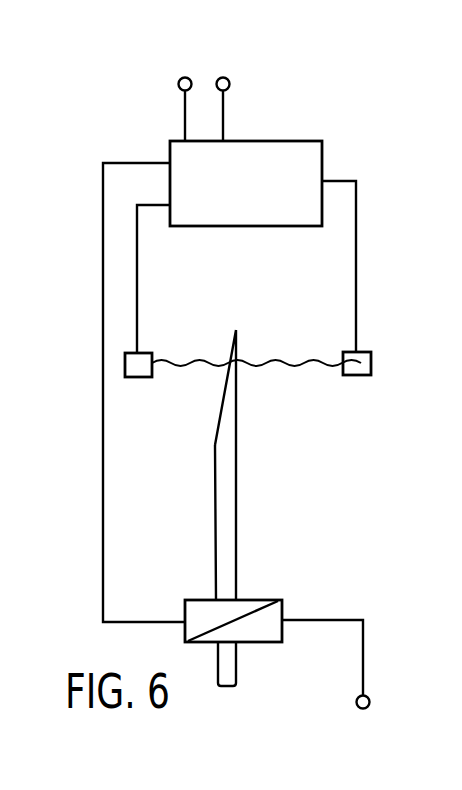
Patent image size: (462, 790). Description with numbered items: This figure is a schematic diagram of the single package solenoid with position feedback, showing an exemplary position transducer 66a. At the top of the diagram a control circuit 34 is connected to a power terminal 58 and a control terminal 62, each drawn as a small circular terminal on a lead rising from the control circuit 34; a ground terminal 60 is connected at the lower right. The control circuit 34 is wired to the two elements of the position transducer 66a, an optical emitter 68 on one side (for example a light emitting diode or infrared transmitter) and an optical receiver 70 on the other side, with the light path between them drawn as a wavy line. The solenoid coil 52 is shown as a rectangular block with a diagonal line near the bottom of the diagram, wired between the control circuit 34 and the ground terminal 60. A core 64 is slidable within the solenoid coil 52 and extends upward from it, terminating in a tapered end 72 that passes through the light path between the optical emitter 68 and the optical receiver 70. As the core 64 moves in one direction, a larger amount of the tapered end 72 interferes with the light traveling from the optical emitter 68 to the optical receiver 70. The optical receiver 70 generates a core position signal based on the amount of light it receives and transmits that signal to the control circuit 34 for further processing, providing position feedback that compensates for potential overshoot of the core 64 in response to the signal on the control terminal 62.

The control circuit 34 is at (322, 162).
The solenoid coil 52 is at (257, 645).
The power terminal 58 is at (225, 98).
The ground terminal 60 is at (367, 657).
The control terminal 62 is at (185, 117).
The core 64 is at (227, 519).
The position transducer 66a is at (372, 336).
The optical emitter 68 is at (357, 375).
The optical receiver 70 is at (141, 378).
The tapered end 72 is at (231, 392).